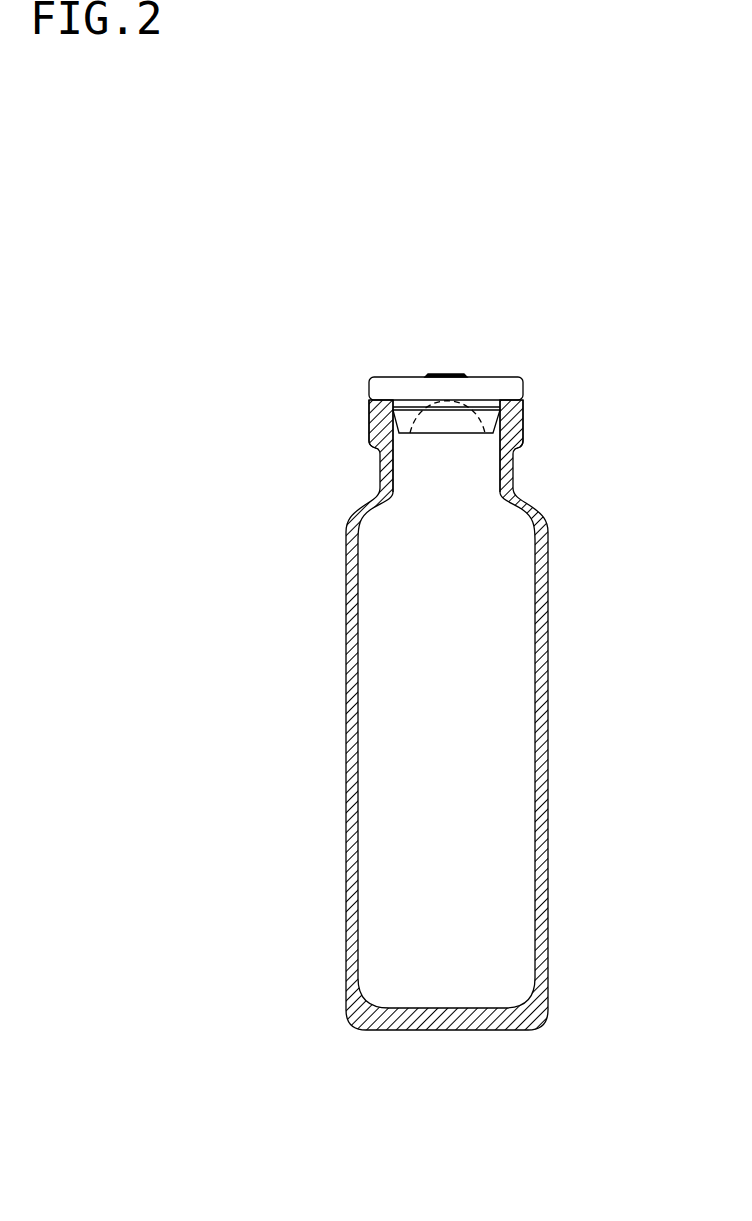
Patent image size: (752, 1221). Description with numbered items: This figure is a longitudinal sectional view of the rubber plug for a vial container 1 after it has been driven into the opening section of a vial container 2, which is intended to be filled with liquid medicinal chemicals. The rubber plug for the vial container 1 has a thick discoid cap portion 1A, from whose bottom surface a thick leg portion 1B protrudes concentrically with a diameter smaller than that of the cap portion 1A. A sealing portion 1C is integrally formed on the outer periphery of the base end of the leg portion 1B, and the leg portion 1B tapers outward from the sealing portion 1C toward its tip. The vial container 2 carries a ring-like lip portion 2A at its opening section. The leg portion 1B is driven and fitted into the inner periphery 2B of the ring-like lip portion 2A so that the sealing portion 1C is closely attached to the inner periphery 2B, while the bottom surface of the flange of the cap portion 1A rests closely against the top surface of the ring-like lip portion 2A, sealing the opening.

The rubber plug for a vial container 1 is at (451, 379).
The cap portion 1A is at (523, 388).
The leg portion 1B is at (443, 433).
The sealing portion 1C is at (483, 407).
The vial container 2 is at (463, 685).
The ring-like lip portion 2A is at (369, 422).
The inner periphery 2B is at (487, 437).